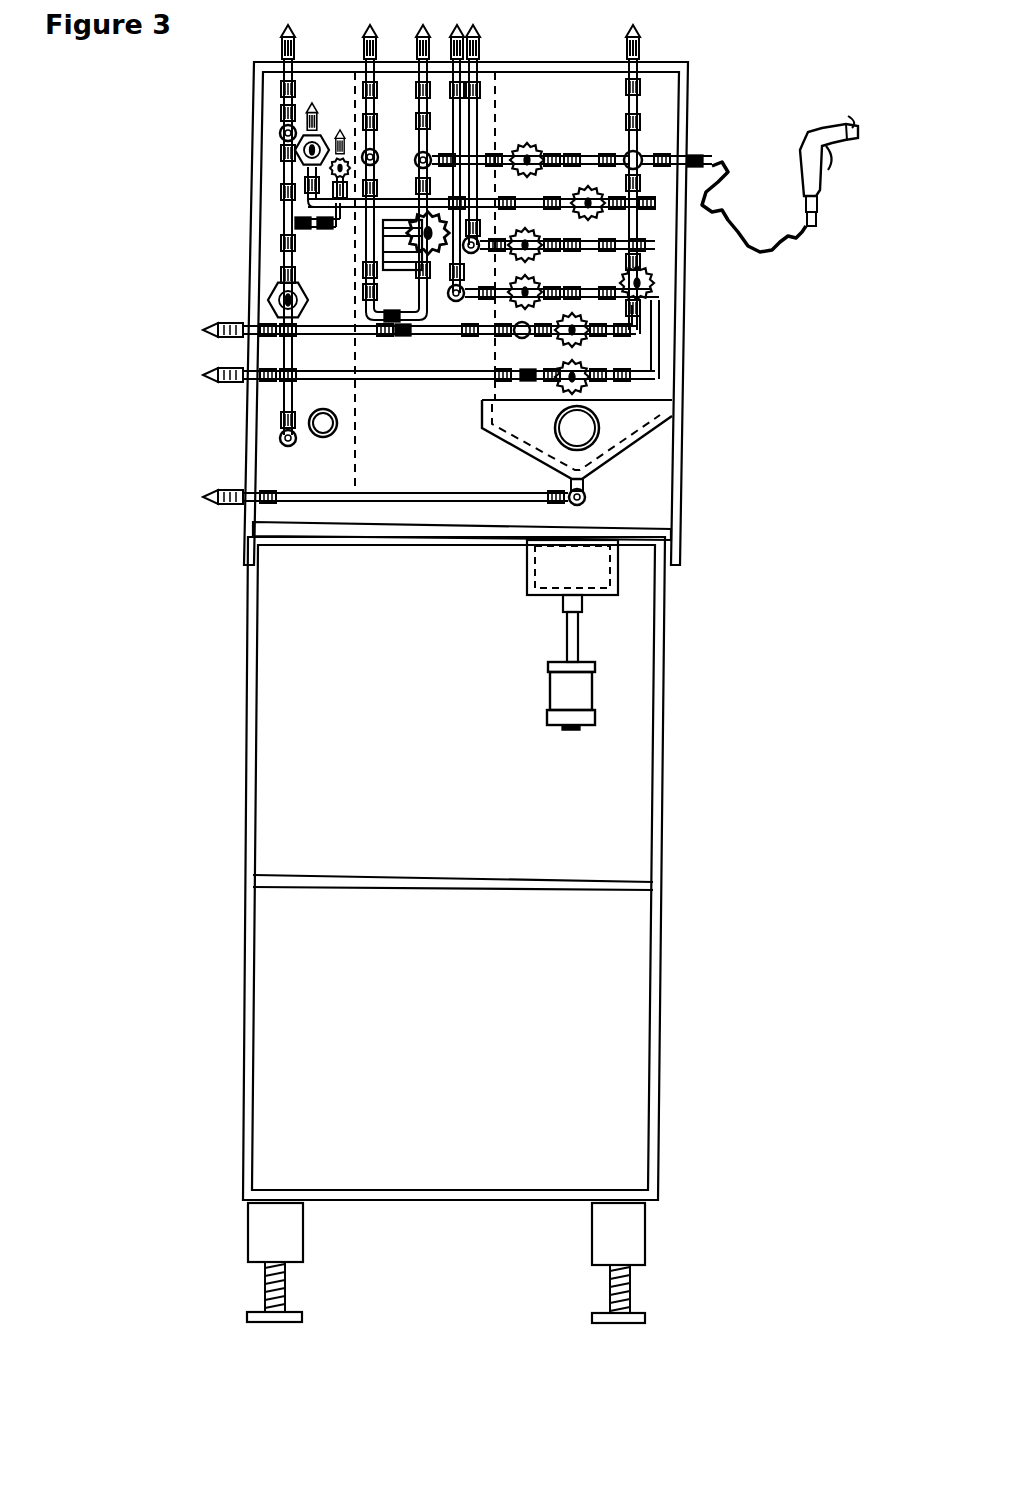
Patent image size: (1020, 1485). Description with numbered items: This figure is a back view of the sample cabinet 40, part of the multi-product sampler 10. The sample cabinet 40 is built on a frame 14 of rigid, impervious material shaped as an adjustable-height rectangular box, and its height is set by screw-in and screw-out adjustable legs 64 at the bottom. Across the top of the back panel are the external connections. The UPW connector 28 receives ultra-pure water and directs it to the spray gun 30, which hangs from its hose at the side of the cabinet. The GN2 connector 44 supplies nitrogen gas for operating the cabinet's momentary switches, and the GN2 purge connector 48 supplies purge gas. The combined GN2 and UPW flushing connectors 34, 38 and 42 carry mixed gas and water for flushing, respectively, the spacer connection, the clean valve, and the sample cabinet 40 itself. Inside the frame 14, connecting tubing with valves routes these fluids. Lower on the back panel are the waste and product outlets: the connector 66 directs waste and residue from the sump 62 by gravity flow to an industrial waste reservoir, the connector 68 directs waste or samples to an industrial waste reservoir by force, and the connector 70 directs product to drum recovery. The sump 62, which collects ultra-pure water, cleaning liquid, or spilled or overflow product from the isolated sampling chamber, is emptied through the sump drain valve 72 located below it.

The multi-product sampler 10 is at (190, 214).
The frame 14 is at (676, 757).
The UPW connector 28 is at (648, 52).
The spray gun 30 is at (826, 180).
The combined GN2 and UPW flushing connector 34 is at (481, 32).
The combined GN2 and UPW flushing connector 38 is at (459, 151).
The sample cabinet 40 is at (745, 343).
The combined GN2 and UPW flushing connector 42 is at (420, 27).
The GN2 connector 44 is at (275, 44).
The GN2 purge connector 48 is at (363, 27).
The sump 62 is at (622, 430).
The adjustable legs 64 is at (592, 1317).
The connector 66 is at (224, 510).
The connector 68 is at (232, 392).
The connector 70 is at (232, 320).
The sump drain valve 72 is at (597, 665).